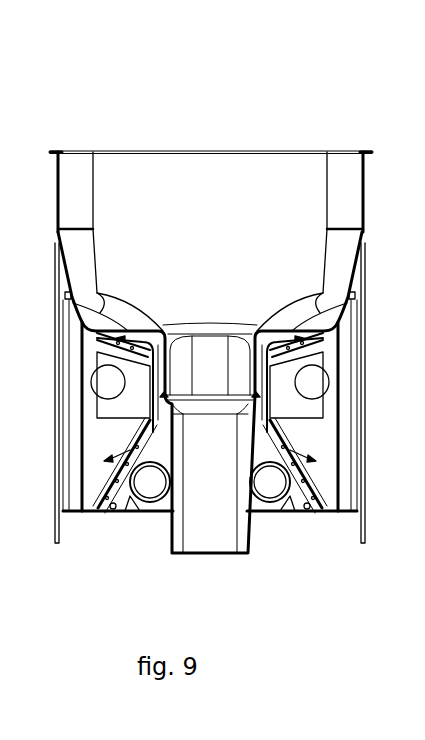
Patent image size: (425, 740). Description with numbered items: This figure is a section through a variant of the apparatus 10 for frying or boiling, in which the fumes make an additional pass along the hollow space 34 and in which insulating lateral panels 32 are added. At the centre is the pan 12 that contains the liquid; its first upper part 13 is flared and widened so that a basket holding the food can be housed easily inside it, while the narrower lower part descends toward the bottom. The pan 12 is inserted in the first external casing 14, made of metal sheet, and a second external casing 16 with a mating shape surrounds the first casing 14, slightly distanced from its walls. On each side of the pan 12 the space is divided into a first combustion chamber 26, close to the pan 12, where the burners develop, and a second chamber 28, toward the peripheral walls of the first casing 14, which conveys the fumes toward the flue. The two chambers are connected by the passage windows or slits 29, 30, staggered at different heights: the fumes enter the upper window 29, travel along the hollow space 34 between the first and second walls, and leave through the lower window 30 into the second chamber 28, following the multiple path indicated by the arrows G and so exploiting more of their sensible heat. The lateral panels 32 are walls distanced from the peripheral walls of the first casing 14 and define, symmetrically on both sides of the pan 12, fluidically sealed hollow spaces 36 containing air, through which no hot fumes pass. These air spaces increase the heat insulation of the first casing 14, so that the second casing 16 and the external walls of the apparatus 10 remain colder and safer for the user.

The apparatus 10 is at (229, 35).
The pan 12 is at (364, 181).
The first upper part 13 is at (56, 190).
The first external casing 14 is at (352, 335).
The second external casing 16 is at (367, 268).
The first combustion chamber 26 is at (116, 512).
The second chamber 28 is at (85, 397).
The passage window or slit 29 is at (105, 315).
The passage window or slit 30 is at (105, 460).
The lateral panel 32 is at (85, 506).
The hollow space 34 is at (101, 513).
The hollow space 36 is at (75, 490).
The arrows G is at (209, 445).